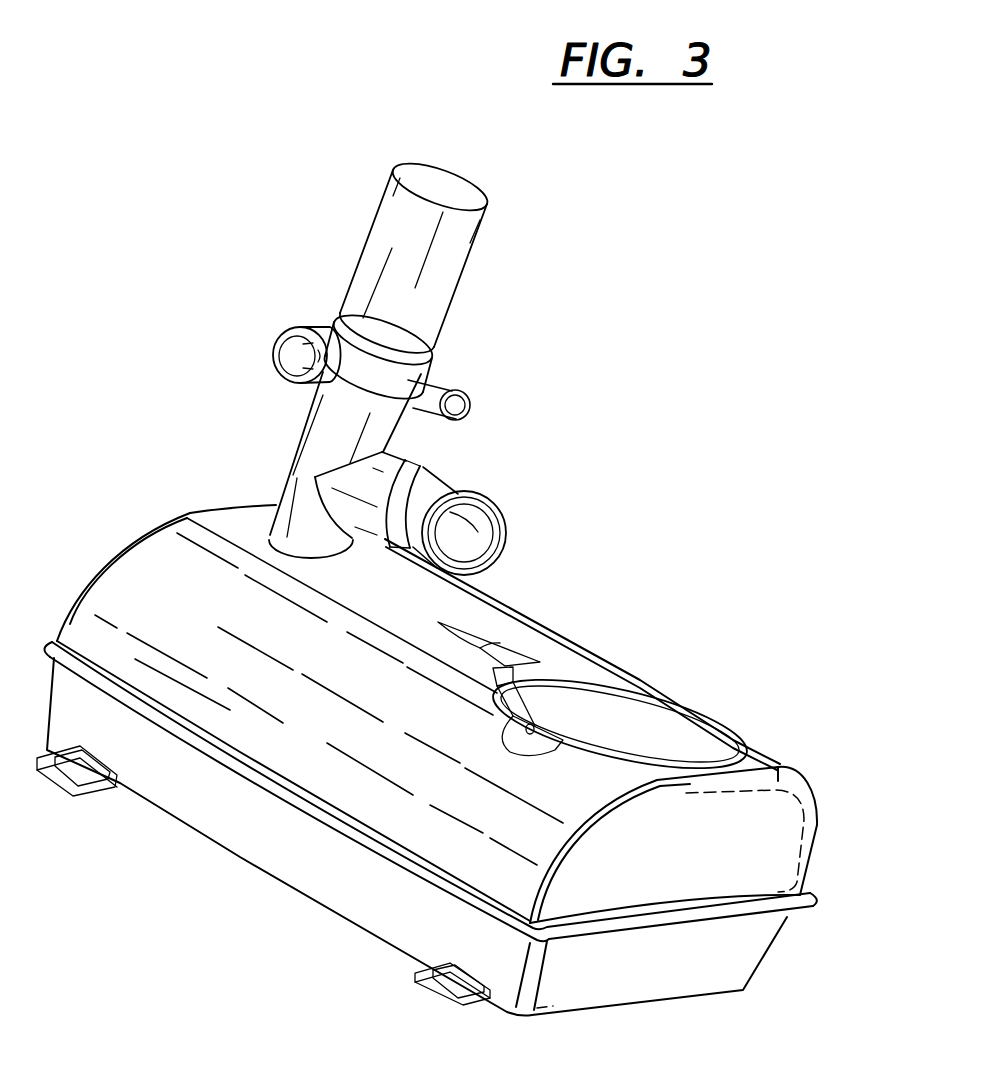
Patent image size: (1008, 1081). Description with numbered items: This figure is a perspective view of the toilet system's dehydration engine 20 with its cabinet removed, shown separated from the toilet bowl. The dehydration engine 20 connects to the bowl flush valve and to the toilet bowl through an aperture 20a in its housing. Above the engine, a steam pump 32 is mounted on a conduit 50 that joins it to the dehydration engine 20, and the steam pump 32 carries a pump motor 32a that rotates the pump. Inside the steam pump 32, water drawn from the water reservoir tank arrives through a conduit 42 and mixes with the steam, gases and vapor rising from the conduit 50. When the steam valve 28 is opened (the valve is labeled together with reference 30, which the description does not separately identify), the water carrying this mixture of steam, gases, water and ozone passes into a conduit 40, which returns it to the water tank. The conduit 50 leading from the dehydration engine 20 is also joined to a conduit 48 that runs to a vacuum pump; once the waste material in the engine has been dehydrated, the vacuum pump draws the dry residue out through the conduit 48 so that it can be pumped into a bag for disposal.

The dehydration engine 20 is at (463, 760).
The aperture 20a is at (658, 697).
The steam valve 28 is at (280, 442).
The conduit 30 is at (298, 440).
The steam pump 32 is at (428, 368).
The pump motor 32a is at (457, 188).
The conduit 40 is at (458, 390).
The conduit 42 is at (313, 328).
The conduit 48 is at (447, 493).
The conduit 50 is at (306, 463).